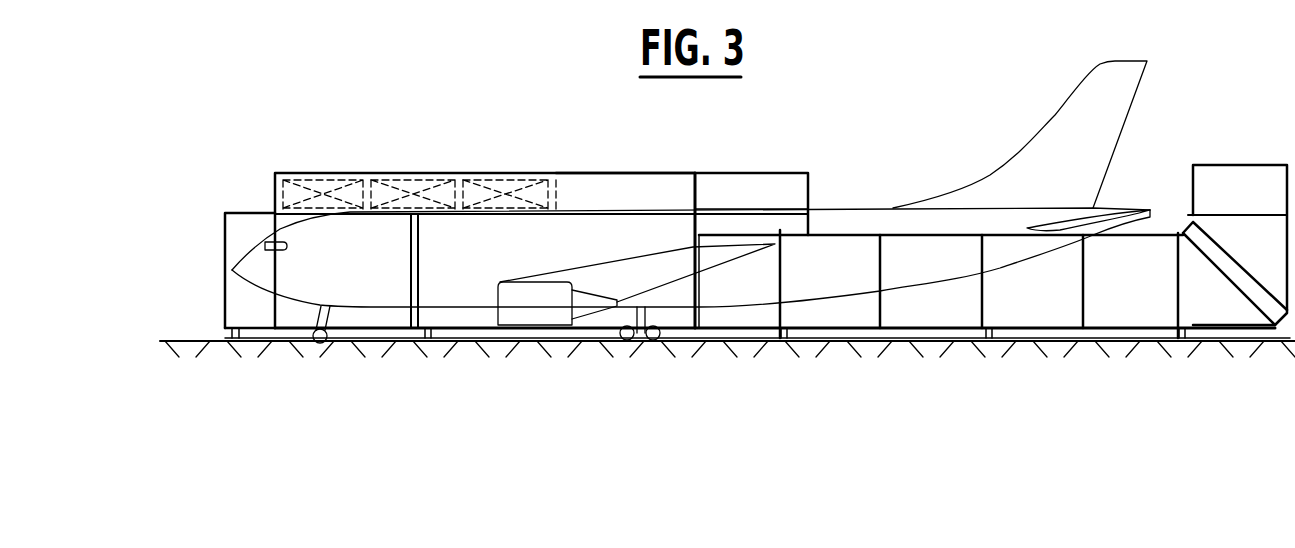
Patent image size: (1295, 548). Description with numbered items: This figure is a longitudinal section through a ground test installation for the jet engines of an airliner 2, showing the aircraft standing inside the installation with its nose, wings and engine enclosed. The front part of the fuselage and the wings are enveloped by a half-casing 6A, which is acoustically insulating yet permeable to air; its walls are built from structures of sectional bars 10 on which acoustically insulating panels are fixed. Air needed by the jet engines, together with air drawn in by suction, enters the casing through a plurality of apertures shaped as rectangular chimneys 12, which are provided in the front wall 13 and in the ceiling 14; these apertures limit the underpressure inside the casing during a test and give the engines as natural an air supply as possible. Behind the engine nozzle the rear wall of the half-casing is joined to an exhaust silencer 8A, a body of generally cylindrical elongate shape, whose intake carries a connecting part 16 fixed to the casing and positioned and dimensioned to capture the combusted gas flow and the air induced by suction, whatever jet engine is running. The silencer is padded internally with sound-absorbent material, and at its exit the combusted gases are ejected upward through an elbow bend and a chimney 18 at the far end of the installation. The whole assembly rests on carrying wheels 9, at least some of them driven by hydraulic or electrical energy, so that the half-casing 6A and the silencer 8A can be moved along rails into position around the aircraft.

The airliner 2 is at (615, 228).
The half-casing 6A is at (321, 166).
The exhaust silencer 8A is at (862, 220).
The carrying wheels 9 is at (427, 341).
The sectional bars 10 is at (410, 262).
The rectangular chimneys 12 is at (240, 296).
The front wall 13 is at (225, 237).
The ceiling 14 is at (566, 172).
The connecting part 16 is at (735, 275).
The chimney 18 is at (1223, 180).